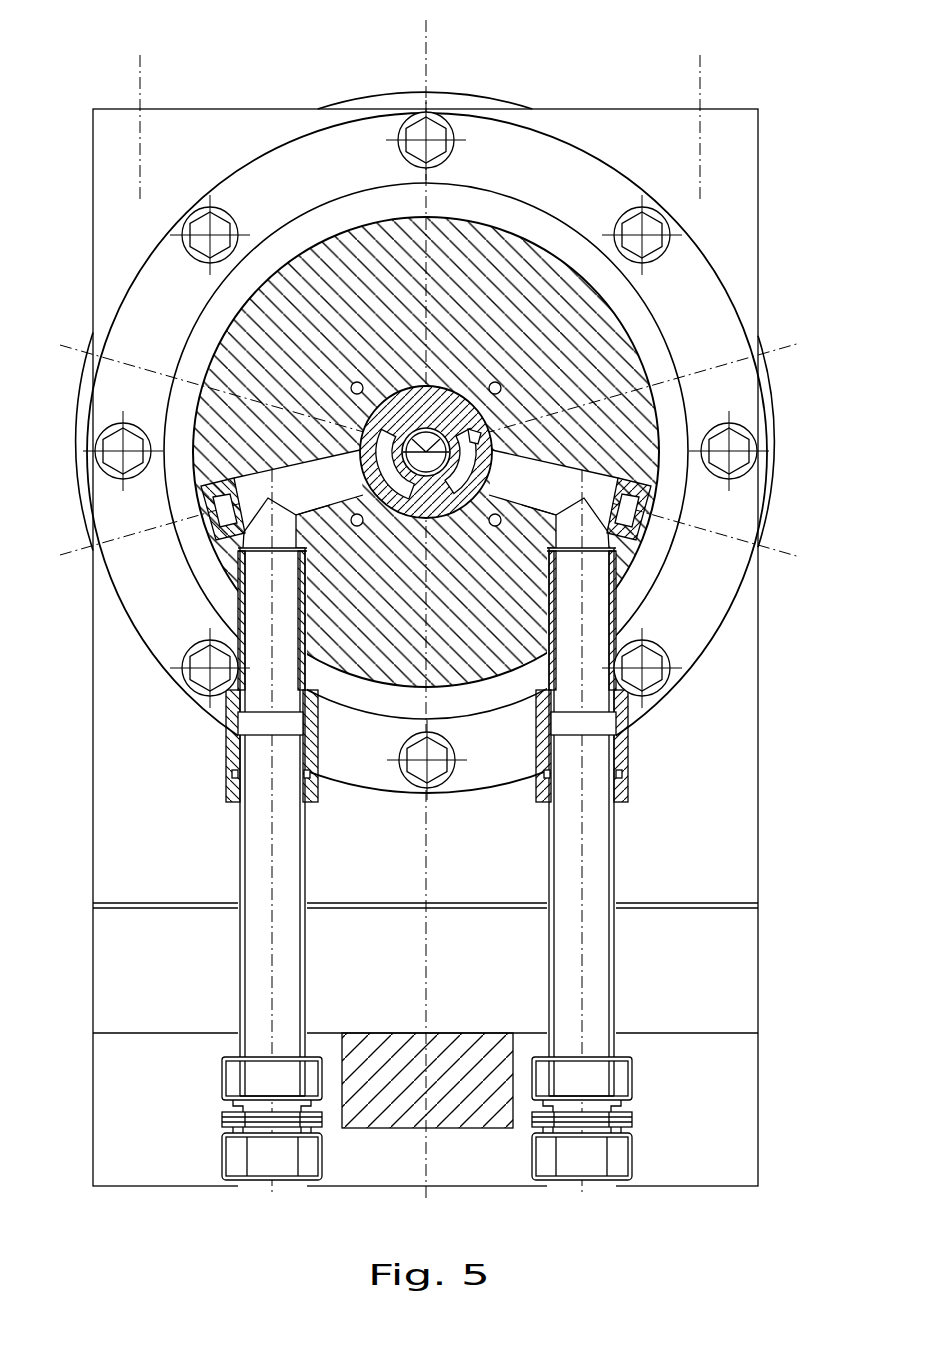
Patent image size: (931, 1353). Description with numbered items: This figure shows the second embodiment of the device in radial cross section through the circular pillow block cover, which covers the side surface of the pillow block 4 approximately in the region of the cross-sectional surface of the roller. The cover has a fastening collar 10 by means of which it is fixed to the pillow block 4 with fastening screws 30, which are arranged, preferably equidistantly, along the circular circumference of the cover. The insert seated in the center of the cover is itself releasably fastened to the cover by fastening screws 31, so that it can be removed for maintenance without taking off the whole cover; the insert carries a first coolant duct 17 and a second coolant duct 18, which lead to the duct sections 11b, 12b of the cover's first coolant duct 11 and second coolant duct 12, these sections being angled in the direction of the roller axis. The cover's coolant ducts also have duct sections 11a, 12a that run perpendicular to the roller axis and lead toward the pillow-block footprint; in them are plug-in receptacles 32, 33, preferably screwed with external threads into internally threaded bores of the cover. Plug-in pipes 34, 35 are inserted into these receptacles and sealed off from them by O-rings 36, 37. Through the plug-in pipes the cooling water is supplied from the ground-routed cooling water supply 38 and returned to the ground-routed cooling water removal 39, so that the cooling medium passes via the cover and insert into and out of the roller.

The pillow block 4 is at (745, 772).
The fastening collar 10 is at (548, 160).
The first coolant duct 11 is at (290, 455).
The duct section 11a is at (320, 578).
The duct section 11b is at (316, 511).
The second coolant duct 12 is at (572, 462).
The duct section 12a is at (533, 588).
The duct section 12b is at (536, 512).
The first coolant duct 17 is at (414, 394).
The second coolant duct 18 is at (476, 434).
The fastening screws 30 is at (440, 130).
The fastening screws 31 is at (354, 383).
The plug-in receptacle 32 is at (310, 624).
The plug-in receptacle 33 is at (620, 600).
The plug-in pipe 34 is at (240, 832).
The plug-in pipe 35 is at (614, 832).
The O-ring 36 is at (232, 774).
The O-ring 37 is at (544, 774).
The cooling water supply 38 is at (225, 1068).
The cooling water removal 39 is at (630, 1068).